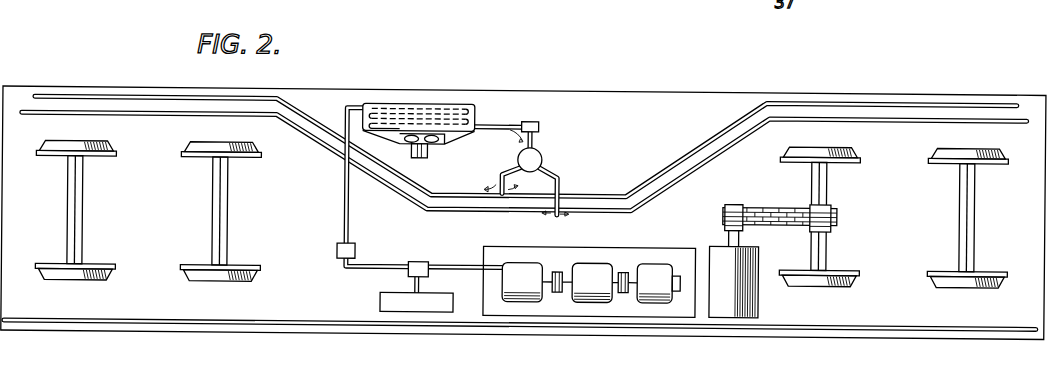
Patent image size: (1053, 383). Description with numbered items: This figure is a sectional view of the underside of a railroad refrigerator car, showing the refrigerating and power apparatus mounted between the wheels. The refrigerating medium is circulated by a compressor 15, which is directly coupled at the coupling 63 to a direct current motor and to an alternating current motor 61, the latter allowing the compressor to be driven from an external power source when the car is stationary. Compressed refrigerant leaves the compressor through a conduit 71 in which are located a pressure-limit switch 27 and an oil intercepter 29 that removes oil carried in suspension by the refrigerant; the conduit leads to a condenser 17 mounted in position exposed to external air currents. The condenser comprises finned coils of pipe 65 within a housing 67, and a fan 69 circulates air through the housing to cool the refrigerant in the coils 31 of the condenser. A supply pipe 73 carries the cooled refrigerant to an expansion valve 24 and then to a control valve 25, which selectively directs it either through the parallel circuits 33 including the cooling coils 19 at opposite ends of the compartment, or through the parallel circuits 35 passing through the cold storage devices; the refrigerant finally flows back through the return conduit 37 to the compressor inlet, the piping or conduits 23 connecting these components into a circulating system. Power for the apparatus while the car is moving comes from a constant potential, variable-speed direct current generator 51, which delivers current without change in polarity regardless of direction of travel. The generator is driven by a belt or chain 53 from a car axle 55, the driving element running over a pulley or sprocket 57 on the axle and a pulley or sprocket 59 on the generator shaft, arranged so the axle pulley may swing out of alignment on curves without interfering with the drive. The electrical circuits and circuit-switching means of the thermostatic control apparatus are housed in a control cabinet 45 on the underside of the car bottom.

The compressor 15 is at (512, 263).
The condenser 17 is at (419, 97).
The cooling coils 19 is at (598, 262).
The piping or conduits 23 is at (524, 168).
The expansion valve 24 is at (536, 117).
The control valve 25 is at (535, 154).
The pressure-limit switch 27 is at (421, 258).
The oil intercepter 29 is at (338, 250).
The coils of the condenser 31 is at (430, 117).
The parallel circuits 33 is at (406, 192).
The parallel circuits 35 is at (445, 195).
The return conduit 37 is at (303, 323).
The control cabinet 45 is at (382, 297).
The direct current generator 51 is at (745, 251).
The belt or chain 53 is at (780, 203).
The car axle 55 is at (830, 175).
The pulley or sprocket 57 is at (832, 197).
The pulley or sprocket 59 is at (730, 198).
The alternating current motor 61 is at (658, 264).
The coupling 63 is at (557, 267).
The coils of pipe 65 is at (425, 106).
The housing 67 is at (446, 136).
The fan 69 is at (429, 147).
The conduit 71 is at (345, 177).
The supply pipe 73 is at (500, 120).